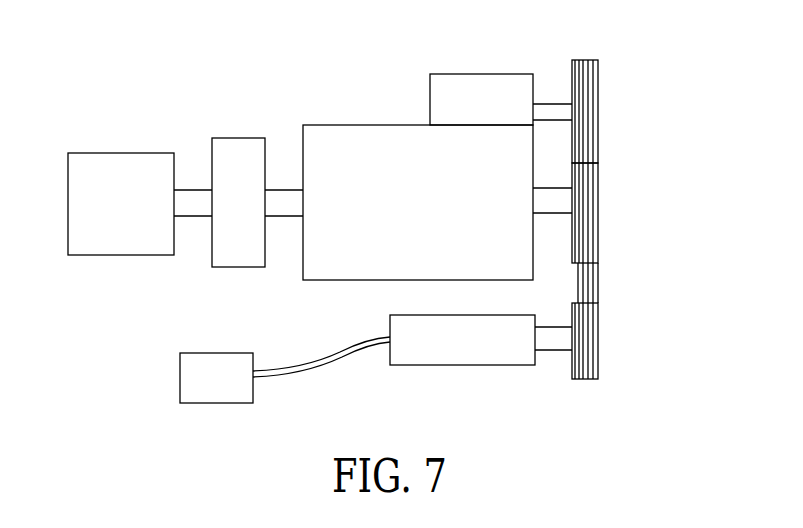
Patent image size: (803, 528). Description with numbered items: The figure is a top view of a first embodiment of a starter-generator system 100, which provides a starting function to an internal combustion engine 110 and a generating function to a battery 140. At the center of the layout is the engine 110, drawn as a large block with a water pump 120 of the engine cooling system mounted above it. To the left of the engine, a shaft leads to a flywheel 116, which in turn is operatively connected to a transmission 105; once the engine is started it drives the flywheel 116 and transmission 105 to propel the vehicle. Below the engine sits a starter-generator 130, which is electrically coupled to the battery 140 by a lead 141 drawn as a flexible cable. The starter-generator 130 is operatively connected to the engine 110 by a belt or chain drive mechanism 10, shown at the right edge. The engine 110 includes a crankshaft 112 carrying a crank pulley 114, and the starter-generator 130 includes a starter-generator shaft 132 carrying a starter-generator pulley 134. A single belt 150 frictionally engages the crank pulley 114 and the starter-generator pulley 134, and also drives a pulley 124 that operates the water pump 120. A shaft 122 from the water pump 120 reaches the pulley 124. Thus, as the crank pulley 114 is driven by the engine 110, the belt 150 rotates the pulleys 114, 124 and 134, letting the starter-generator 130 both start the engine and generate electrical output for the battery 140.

The starter-generator system 100 is at (216, 59).
The transmission 105 is at (113, 256).
The flywheel 116 is at (238, 268).
The internal combustion engine 110 is at (343, 123).
The water pump 120 is at (488, 72).
The upper shaft 122 is at (548, 102).
The crankshaft 112 is at (553, 214).
The pulley 124 is at (600, 78).
The crank pulley 114 is at (600, 180).
The belt 150 is at (595, 278).
The belt or chain drive mechanism 10 is at (601, 294).
The starter-generator pulley 134 is at (600, 345).
The starter-generator 130 is at (460, 366).
The starter-generator shaft 132 is at (557, 354).
The battery 140 is at (180, 378).
The lead 141 is at (340, 361).